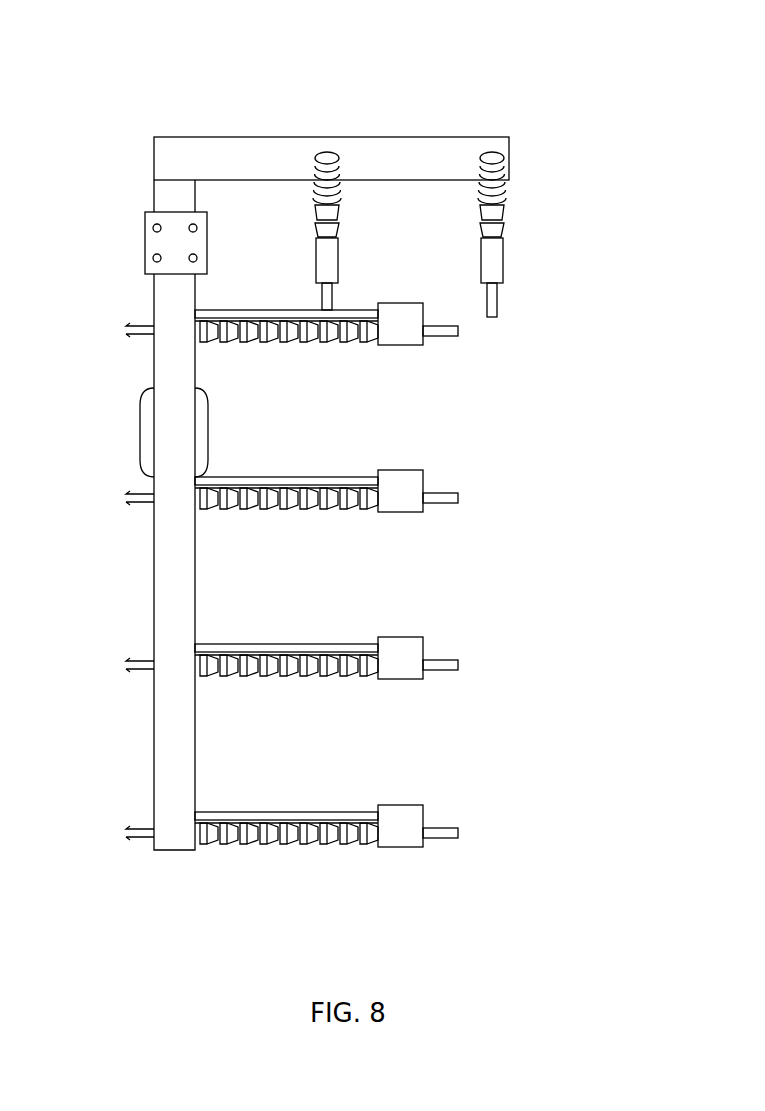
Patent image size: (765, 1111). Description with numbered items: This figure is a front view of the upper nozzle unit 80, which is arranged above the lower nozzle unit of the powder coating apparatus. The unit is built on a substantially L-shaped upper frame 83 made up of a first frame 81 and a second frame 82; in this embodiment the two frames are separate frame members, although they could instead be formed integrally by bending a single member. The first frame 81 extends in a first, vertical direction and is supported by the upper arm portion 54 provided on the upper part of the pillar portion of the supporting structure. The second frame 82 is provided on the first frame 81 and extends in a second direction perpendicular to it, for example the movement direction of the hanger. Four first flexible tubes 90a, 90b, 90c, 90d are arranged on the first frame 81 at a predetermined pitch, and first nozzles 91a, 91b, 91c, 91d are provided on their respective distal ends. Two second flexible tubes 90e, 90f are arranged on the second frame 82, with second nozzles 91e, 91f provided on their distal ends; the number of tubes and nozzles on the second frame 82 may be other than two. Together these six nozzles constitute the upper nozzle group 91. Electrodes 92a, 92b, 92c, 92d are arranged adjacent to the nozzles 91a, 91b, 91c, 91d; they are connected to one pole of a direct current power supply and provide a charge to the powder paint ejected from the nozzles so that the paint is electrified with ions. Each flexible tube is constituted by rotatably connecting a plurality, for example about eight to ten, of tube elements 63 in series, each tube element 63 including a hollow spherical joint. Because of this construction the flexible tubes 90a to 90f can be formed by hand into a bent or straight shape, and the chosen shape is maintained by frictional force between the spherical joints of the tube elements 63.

The upper nozzle unit 80 is at (394, 82).
The second frame 82 is at (261, 155).
The upper arm portion 54 is at (143, 242).
The first frame 81 is at (160, 583).
The upper frame 83 is at (126, 515).
The second flexible tube 90e is at (340, 200).
The second nozzle 91e is at (339, 295).
The second flexible tube 90f is at (505, 198).
The second nozzle 91f is at (497, 300).
The electrode 92d is at (252, 310).
The first flexible tube 90d is at (297, 343).
The tube element 63 is at (268, 343).
The upper nozzle group 91 is at (465, 648).
The first nozzle 91d is at (460, 331).
The first nozzle 91c is at (460, 498).
The first nozzle 91b is at (460, 665).
The first nozzle 91a is at (465, 828).
The electrode 92c is at (325, 477).
The first flexible tube 90c is at (293, 512).
The electrode 92b is at (325, 644).
The first flexible tube 90b is at (293, 679).
The electrode 92a is at (325, 812).
The first flexible tube 90a is at (293, 847).